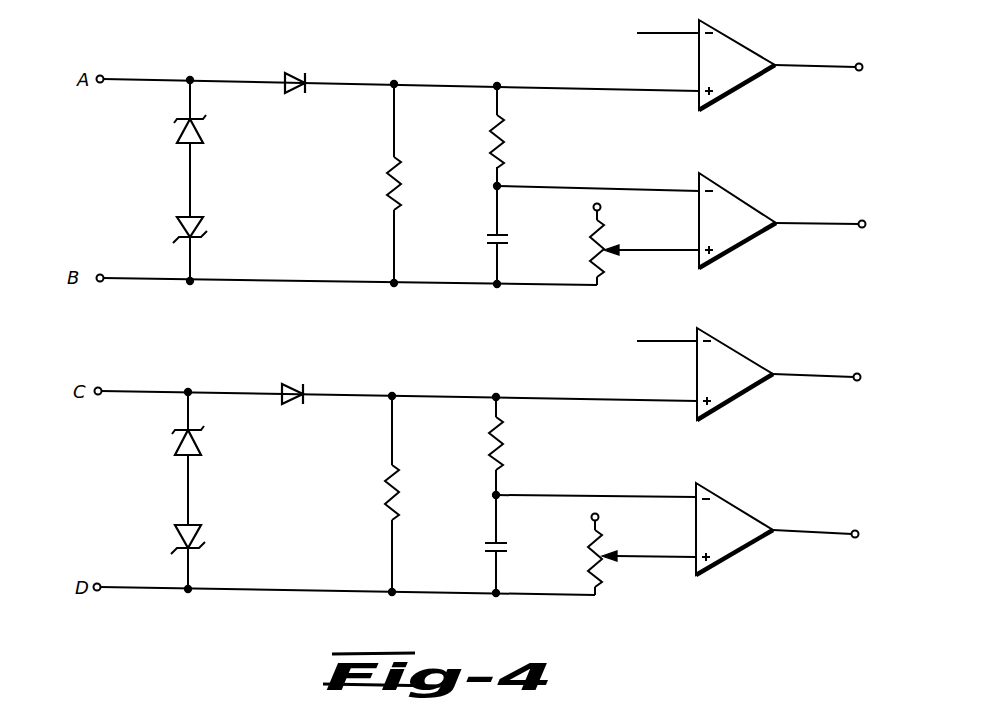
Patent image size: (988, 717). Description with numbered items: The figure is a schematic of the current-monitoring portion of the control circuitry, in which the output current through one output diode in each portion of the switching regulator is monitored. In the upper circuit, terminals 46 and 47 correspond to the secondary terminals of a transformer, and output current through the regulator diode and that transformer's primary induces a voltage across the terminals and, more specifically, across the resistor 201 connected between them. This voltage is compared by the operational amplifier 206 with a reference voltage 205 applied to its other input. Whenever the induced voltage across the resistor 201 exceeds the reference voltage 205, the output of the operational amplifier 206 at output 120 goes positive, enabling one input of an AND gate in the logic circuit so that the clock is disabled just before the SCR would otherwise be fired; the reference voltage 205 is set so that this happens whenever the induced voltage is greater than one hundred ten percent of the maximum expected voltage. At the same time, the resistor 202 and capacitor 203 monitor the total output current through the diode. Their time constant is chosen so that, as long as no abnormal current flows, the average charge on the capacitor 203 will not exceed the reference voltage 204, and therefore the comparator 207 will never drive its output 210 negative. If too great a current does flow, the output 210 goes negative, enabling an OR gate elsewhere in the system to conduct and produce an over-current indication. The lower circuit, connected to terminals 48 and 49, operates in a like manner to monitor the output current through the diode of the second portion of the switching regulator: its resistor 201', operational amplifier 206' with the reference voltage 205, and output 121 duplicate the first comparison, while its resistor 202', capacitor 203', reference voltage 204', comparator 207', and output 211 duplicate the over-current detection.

The terminal 46 is at (104, 76).
The terminal 47 is at (104, 275).
The terminal 48 is at (102, 388).
The terminal 49 is at (101, 584).
The resistor 201 is at (363, 183).
The resistor 201' is at (366, 494).
The resistor 202 is at (519, 136).
The resistor 202' is at (524, 446).
The capacitor 203 is at (462, 235).
The capacitor 203' is at (460, 544).
The reference voltage 204 is at (627, 241).
The reference voltage 204' is at (625, 551).
The reference voltage 205 is at (642, 33).
The operational amplifier 206 is at (737, 60).
The operational amplifier 206' is at (735, 370).
The comparator 207 is at (636, 215).
The comparator 207' is at (634, 519).
The output 120 is at (857, 64).
The output 121 is at (857, 374).
The output 210 is at (860, 221).
The output 211 is at (870, 524).